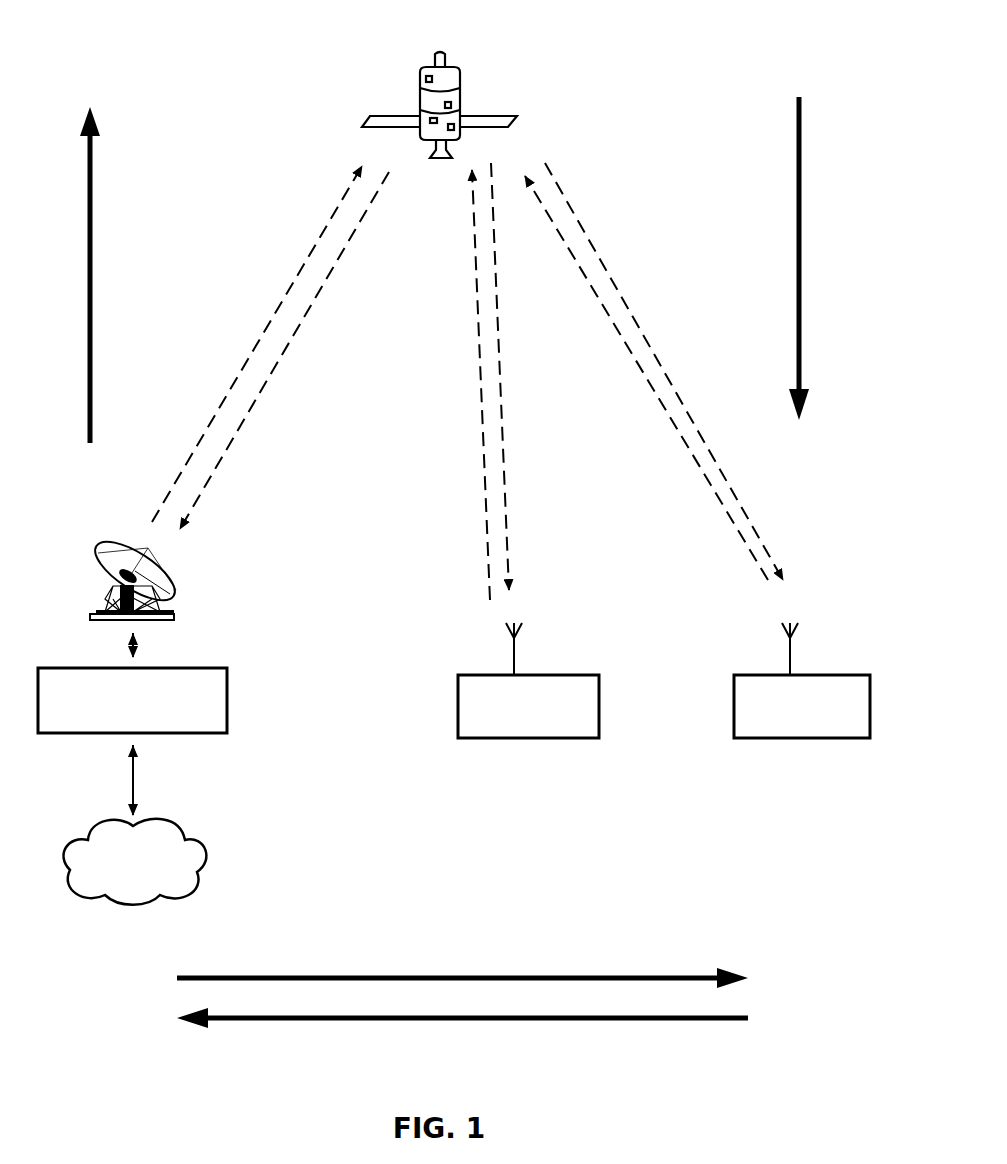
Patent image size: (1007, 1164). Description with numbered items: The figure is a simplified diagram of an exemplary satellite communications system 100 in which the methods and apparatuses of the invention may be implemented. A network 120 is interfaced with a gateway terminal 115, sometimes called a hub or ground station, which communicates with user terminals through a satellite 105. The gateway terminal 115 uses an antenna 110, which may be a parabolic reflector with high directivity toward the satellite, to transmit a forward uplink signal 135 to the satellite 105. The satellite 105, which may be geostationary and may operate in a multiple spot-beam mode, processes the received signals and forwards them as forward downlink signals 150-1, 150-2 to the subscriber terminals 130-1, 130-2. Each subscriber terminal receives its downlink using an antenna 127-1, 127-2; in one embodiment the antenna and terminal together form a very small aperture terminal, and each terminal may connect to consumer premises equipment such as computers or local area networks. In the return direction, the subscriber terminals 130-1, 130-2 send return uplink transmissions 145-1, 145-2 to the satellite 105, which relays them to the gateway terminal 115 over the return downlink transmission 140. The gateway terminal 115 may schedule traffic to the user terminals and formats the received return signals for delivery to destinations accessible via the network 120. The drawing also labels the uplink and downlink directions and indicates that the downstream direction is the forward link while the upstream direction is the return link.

The satellite communications system 100 is at (616, 108).
The satellite 105 is at (442, 52).
The antenna 110 is at (168, 597).
The gateway terminal 115 is at (227, 700).
The network 120 is at (207, 862).
The antenna 127-1 is at (460, 617).
The antenna 127-2 is at (736, 627).
The user terminal 130-1 is at (458, 703).
The user terminal 130-2 is at (734, 705).
The forward uplink signal 135 is at (262, 341).
The return downlink transmission 140 is at (325, 278).
The return uplink transmission 145-1 is at (482, 389).
The return uplink transmission 145-2 is at (643, 383).
The forward downlink signal 150-1 is at (505, 487).
The forward downlink signal 150-2 is at (603, 275).